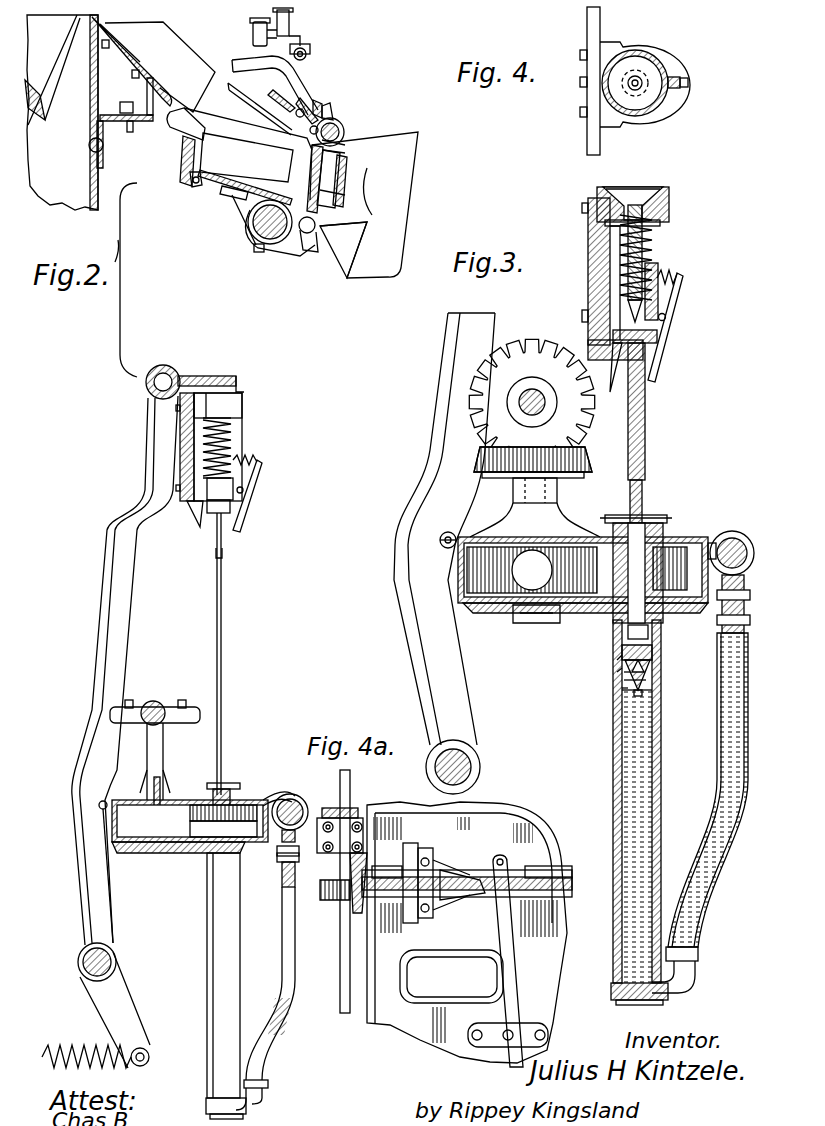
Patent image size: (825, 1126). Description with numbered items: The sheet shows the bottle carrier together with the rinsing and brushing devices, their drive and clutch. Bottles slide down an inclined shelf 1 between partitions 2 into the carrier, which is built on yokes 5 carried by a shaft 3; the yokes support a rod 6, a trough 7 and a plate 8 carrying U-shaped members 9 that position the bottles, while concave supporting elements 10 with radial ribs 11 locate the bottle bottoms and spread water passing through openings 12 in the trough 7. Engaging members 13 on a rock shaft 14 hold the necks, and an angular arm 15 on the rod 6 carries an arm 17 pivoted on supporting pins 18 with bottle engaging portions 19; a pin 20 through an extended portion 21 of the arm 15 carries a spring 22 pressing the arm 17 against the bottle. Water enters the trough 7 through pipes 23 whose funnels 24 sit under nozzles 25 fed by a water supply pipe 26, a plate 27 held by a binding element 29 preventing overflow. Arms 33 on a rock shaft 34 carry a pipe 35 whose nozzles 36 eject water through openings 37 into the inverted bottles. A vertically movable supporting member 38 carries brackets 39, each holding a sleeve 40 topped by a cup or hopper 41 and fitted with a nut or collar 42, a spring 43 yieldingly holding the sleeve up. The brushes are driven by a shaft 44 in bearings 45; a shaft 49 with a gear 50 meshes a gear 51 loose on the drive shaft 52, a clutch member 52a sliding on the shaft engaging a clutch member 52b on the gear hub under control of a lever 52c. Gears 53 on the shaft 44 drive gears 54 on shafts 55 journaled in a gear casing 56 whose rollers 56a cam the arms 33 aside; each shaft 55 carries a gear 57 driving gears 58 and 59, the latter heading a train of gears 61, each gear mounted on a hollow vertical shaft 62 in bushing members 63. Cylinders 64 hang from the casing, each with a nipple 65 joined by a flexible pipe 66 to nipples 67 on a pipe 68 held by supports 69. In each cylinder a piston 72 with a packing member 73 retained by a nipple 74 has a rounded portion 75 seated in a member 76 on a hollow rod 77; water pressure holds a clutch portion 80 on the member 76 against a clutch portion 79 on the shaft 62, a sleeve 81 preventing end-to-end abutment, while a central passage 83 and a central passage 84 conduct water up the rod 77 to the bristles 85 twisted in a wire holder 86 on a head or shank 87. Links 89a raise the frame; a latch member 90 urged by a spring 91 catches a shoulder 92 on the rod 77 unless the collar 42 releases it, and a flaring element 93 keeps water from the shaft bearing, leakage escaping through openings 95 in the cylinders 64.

In FIG. 2, the inclined shelf 1 is at (137, 58).
In FIG. 2, the partitions 2 is at (190, 67).
In FIG. 2, the shaft 3 is at (272, 240).
In FIG. 2, the yokes 5 is at (364, 205).
In FIG. 2, the rod 6 is at (342, 141).
In FIG. 2, the trough 7 is at (345, 152).
In FIG. 2, the plate 8 is at (232, 235).
In FIG. 2, the U-shaped members 9 is at (215, 200).
In FIG. 2, the concave supporting elements 10 is at (343, 198).
In FIG. 2, the radial ribs 11 is at (300, 165).
In FIG. 2, the openings 12 is at (330, 172).
In FIG. 2, the engaging members 13 is at (186, 160).
In FIG. 2, the rock shaft 14 is at (193, 185).
In FIG. 2, the angular arm 15 is at (296, 80).
In FIG. 2, the arms 17 is at (308, 103).
In FIG. 2, the supporting pins 18 is at (340, 127).
In FIG. 2, the bottle engaging portions 19 is at (278, 93).
In FIG. 2, the pin 20 is at (318, 108).
In FIG. 2, the extended portion 21 is at (328, 112).
In FIG. 2, the spring 22 is at (283, 105).
In FIG. 2, the pipes 23 is at (312, 245).
In FIG. 2, the funnels 24 is at (343, 250).
In FIG. 2, the nozzles 25 is at (289, 32).
In FIG. 2, the water supply pipe 26 is at (310, 52).
In FIG. 2, the plate 27 is at (346, 188).
In FIG. 2, the binding element 29 is at (372, 165).
In FIG. 2, the arms 33 is at (125, 635).
In FIG. 3, the arms 33 is at (458, 668).
In FIG. 2, the rock shaft 34 is at (116, 960).
In FIG. 3, the rock shaft 34 is at (428, 775).
In FIG. 2, the pipe 35 is at (175, 372).
In FIG. 2, the nozzles 36 is at (213, 376).
In FIG. 2, the openings 37 is at (240, 378).
In FIG. 2, the supporting member 38 is at (186, 435).
In FIG. 4, the supporting member 38 is at (590, 130).
In FIG. 3, the supporting member 38 is at (590, 275).
In FIG. 2, the brackets 39 is at (232, 407).
In FIG. 4, the brackets 39 is at (663, 62).
In FIG. 3, the brackets 39 is at (670, 200).
In FIG. 2, the sleeve 40 is at (233, 440).
In FIG. 3, the sleeve 40 is at (652, 242).
In FIG. 4, the cup or hopper 41 is at (642, 108).
In FIG. 3, the cup or hopper 41 is at (648, 192).
In FIG. 2, the nut or collar 42 is at (228, 515).
In FIG. 3, the nut or collar 42 is at (600, 392).
In FIG. 2, the spring 43 is at (233, 428).
In FIG. 3, the spring 43 is at (658, 266).
In FIG. 2, the shaft 44 is at (158, 710).
In FIG. 3, the shaft 44 is at (520, 405).
In FIG. 2, the bearings 45 is at (180, 718).
In FIG. 4A, the shaft 49 is at (345, 1010).
In FIG. 4A, the gear 50 is at (352, 818).
In FIG. 4A, the gear 51 is at (358, 905).
In FIG. 4A, the drive shaft 52 is at (470, 930).
In FIG. 4A, the clutch member 52a is at (440, 868).
In FIG. 4A, the clutch member 52b is at (412, 918).
In FIG. 4A, the lever 52c is at (505, 1062).
In FIG. 3, the gears 53 is at (585, 420).
In FIG. 3, the gears 54 is at (578, 462).
In FIG. 3, the shafts 55 is at (540, 482).
In FIG. 2, the gear casing 56 is at (165, 850).
In FIG. 3, the gear casing 56 is at (583, 605).
In FIG. 2, the rollers 56a is at (103, 810).
In FIG. 3, the rollers 56a is at (445, 546).
In FIG. 3, the gear 57 is at (475, 606).
In FIG. 3, the gear 58 is at (548, 622).
In FIG. 3, the gear 59 is at (665, 530).
In FIG. 2, the train of gears 61 is at (205, 818).
In FIG. 3, the hollow vertical shaft 62 is at (662, 518).
In FIG. 3, the bushing members 63 is at (618, 630).
In FIG. 2, the cylinders 64 is at (222, 940).
In FIG. 3, the cylinders 64 is at (614, 742).
In FIG. 2, the nipple 65 is at (260, 1104).
In FIG. 3, the nipple 65 is at (690, 988).
In FIG. 2, the flexible pipe 66 is at (296, 950).
In FIG. 3, the flexible pipe 66 is at (748, 800).
In FIG. 2, the nipples 67 is at (297, 878).
In FIG. 3, the nipples 67 is at (750, 610).
In FIG. 2, the pipe 68 is at (304, 806).
In FIG. 3, the pipe 68 is at (755, 553).
In FIG. 2, the supports 69 is at (285, 796).
In FIG. 3, the supports 69 is at (716, 545).
In FIG. 3, the piston 72 is at (652, 668).
In FIG. 3, the packing member 73 is at (625, 674).
In FIG. 3, the nipple 74 is at (625, 682).
In FIG. 3, the rounded portion 75 is at (654, 652).
In FIG. 3, the member 76 is at (650, 632).
In FIG. 2, the hollow rod 77 is at (222, 600).
In FIG. 3, the hollow rod 77 is at (646, 400).
In FIG. 3, the clutch portion 79 is at (625, 660).
In FIG. 3, the clutch portion 80 is at (623, 668).
In FIG. 3, the sleeve 81 is at (668, 690).
In FIG. 3, the central passage 83 is at (654, 700).
In FIG. 3, the central passage 84 is at (656, 690).
In FIG. 4, the bristles 85 is at (638, 80).
In FIG. 3, the bristles 85 is at (645, 238).
In FIG. 3, the wire holder 86 is at (588, 315).
In FIG. 3, the head or shank 87 is at (667, 318).
In FIG. 4A, the links 89a is at (352, 805).
In FIG. 2, the latch member 90 is at (247, 512).
In FIG. 4, the latch member 90 is at (689, 84).
In FIG. 3, the latch member 90 is at (662, 350).
In FIG. 2, the spring 91 is at (258, 460).
In FIG. 4, the spring 91 is at (683, 79).
In FIG. 3, the spring 91 is at (688, 274).
In FIG. 2, the shoulder 92 is at (222, 555).
In FIG. 3, the shoulder 92 is at (646, 420).
In FIG. 2, the flaring element 93 is at (232, 790).
In FIG. 3, the flaring element 93 is at (656, 514).
In FIG. 3, the openings 95 is at (623, 690).